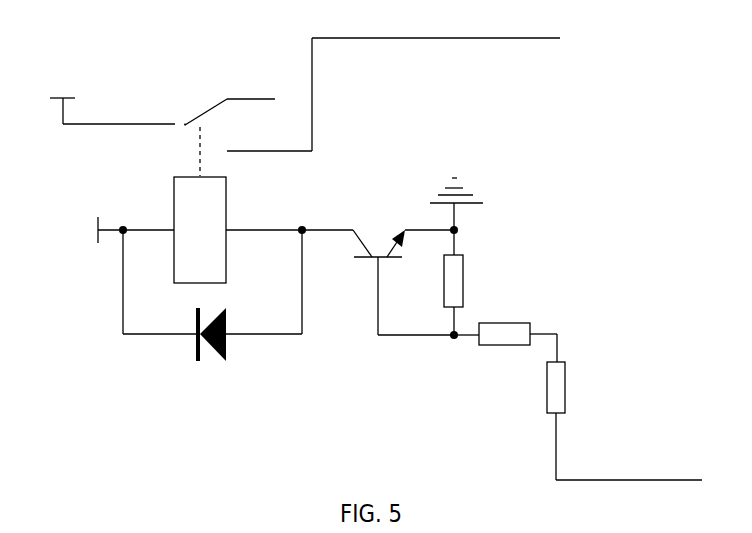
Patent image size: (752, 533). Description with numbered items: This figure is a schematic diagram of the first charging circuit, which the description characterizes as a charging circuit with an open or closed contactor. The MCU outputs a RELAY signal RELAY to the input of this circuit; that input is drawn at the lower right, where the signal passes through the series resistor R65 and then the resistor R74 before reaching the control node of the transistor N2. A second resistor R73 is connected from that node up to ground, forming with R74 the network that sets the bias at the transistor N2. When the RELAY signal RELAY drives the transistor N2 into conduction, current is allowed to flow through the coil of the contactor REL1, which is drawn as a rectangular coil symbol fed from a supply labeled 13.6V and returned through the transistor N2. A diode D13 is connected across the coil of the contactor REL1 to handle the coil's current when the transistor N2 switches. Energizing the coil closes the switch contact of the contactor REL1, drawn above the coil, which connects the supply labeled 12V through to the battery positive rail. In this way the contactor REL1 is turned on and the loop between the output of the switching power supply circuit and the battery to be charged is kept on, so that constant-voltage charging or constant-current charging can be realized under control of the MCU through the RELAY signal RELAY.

The 12V supply input 12V is at (108, 97).
The contactor REL1 is at (242, 174).
The 13.6V supply input 13.6V is at (195, 230).
The diode D13 is at (212, 318).
The transistor N2 is at (403, 266).
The resistor R73 is at (475, 297).
The resistor R74 is at (505, 348).
The resistor R65 is at (578, 421).
The RELAY signal RELAY is at (629, 467).